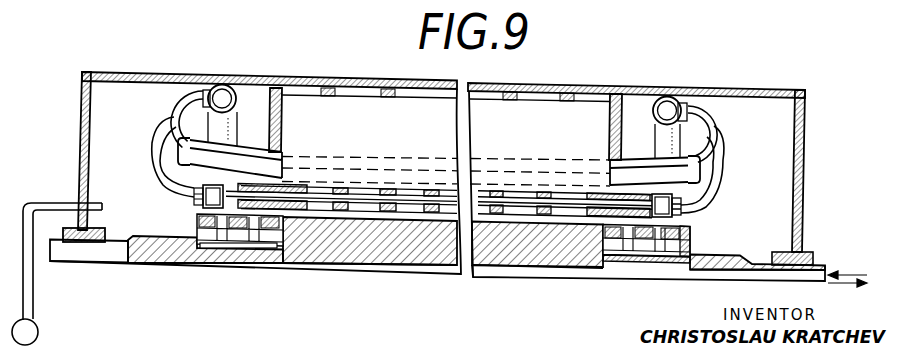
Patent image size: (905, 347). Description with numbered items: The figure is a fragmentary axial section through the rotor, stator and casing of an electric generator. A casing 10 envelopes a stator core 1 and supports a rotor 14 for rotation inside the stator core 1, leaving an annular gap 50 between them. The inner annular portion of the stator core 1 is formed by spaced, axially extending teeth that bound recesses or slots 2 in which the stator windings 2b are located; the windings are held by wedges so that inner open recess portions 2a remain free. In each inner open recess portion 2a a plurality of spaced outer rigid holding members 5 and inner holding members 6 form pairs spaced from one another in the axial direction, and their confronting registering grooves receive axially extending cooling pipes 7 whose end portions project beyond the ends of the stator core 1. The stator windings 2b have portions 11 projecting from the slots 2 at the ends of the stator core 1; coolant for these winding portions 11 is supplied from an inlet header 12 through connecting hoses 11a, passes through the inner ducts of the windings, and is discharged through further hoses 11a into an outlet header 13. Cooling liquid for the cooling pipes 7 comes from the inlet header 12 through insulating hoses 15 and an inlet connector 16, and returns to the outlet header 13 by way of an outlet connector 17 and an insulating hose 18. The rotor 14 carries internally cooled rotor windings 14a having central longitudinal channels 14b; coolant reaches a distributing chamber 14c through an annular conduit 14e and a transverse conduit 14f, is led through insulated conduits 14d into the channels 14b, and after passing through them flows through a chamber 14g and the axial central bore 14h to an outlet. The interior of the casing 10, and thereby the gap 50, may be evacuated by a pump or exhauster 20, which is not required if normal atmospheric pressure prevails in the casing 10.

The stator core 1 is at (386, 124).
The recesses or slots 2 is at (405, 190).
The inner open recess portions 2a is at (553, 213).
The stator windings 2b is at (530, 157).
The outer rigid holding members 5 is at (547, 195).
The inner holding members 6 is at (495, 213).
The cooling pipes 7 is at (414, 206).
The casing 10 is at (80, 135).
The stator winding portions 11 is at (712, 177).
The connecting hoses 11a is at (177, 99).
The inlet header 12 is at (665, 92).
The outlet header 13 is at (235, 76).
The rotor 14 is at (720, 258).
The rotor windings 14a is at (607, 262).
The central longitudinal channels 14b is at (680, 235).
The distributing chamber 14c is at (618, 263).
The insulated conduits 14d is at (655, 248).
The annular conduit 14e is at (808, 258).
The transverse conduit 14f is at (645, 255).
The chamber 14g is at (221, 248).
The axial central bore 14h is at (333, 267).
The insulating hoses 15 is at (710, 200).
The inlet connector 16 is at (668, 195).
The outlet connector 17 is at (195, 202).
The insulating hose 18 is at (162, 165).
The pump or exhauster 20 is at (40, 330).
The annular gap 50 is at (318, 214).